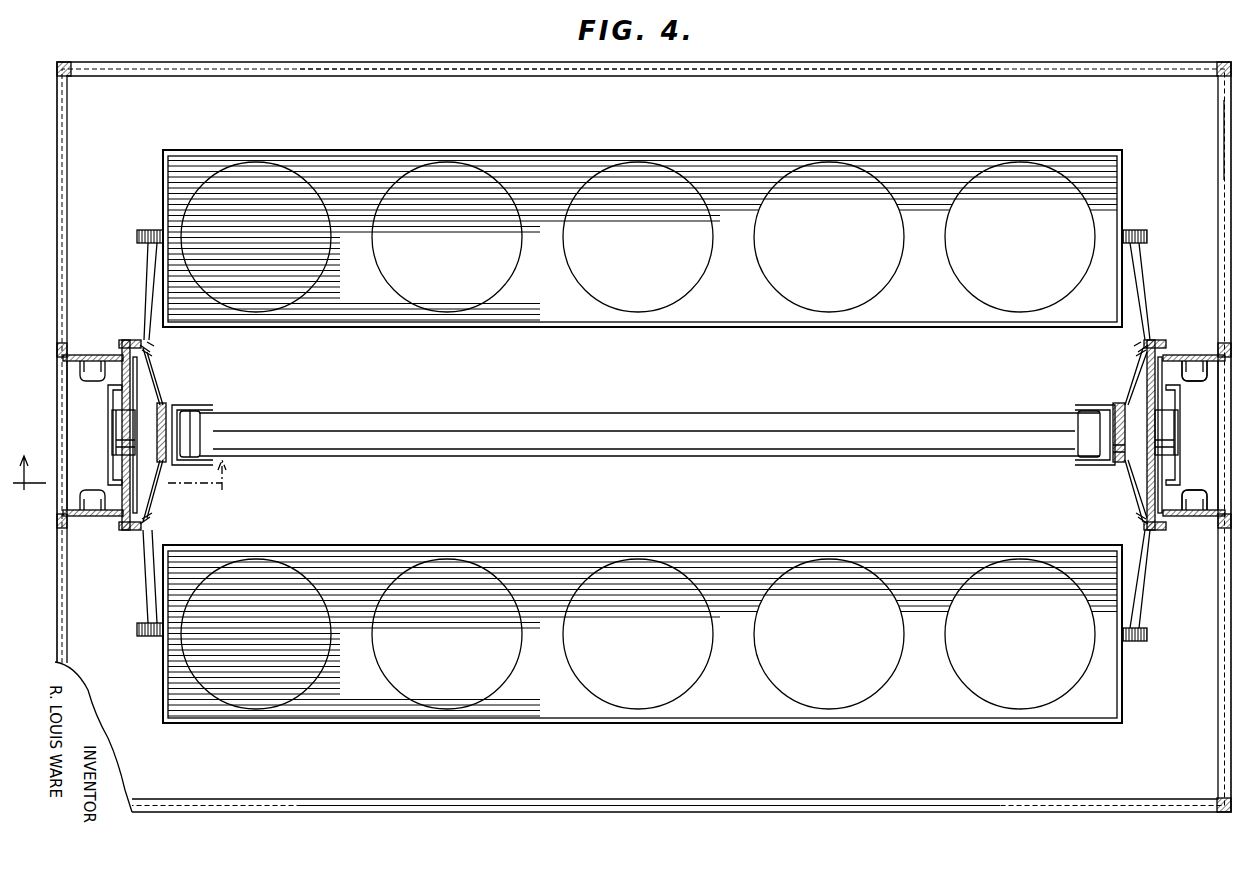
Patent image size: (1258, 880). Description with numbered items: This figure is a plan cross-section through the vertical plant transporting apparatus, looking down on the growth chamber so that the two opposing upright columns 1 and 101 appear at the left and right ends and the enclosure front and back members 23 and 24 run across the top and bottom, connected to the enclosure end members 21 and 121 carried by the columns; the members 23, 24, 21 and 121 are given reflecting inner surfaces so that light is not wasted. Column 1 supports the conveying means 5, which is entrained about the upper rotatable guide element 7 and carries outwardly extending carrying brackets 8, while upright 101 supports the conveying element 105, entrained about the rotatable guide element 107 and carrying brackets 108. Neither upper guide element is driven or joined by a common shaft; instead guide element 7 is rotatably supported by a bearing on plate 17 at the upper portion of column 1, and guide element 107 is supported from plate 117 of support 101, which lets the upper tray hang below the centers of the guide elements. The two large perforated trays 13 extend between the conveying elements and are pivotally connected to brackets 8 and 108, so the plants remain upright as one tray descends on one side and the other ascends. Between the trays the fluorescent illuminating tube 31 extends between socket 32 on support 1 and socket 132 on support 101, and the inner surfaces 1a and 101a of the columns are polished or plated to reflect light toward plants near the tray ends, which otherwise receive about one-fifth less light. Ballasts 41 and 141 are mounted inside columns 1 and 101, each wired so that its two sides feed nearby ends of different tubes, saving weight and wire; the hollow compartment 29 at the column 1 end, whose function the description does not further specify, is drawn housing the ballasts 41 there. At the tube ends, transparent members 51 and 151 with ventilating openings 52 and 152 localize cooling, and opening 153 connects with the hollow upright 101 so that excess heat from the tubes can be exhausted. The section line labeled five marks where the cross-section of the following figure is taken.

The upright column 1 is at (62, 359).
The reflecting inner surface 1a is at (150, 490).
The conveying means 5 is at (133, 538).
The rotatable guide element 7 is at (150, 361).
The carrying bracket 8 is at (143, 286).
The tray 13 is at (866, 329).
The plate 17 is at (108, 432).
The enclosure end member 21 is at (62, 133).
The enclosure front member 23 is at (816, 63).
The enclosure back member 24 is at (818, 813).
The housing 29 is at (60, 420).
The illuminating tube 31 is at (920, 412).
The socket 32 is at (164, 406).
The ballast 41 is at (96, 381).
The member having ventilating openings 51 is at (196, 405).
The ventilating opening 52 is at (198, 420).
The upright support 101 is at (1226, 503).
The reflecting inner surface 101a is at (1135, 490).
The conveying element 105 is at (1150, 531).
The rotatable guide element 107 is at (1138, 352).
The carrying bracket 108 is at (1146, 283).
The plate 117 is at (1179, 442).
The enclosure end member 121 is at (1226, 137).
The socket 132 is at (1117, 462).
The ballast 141 is at (1194, 381).
The member having ventilating openings 151 is at (1098, 410).
The ventilating opening 152 is at (1082, 422).
The opening 153 is at (1118, 405).